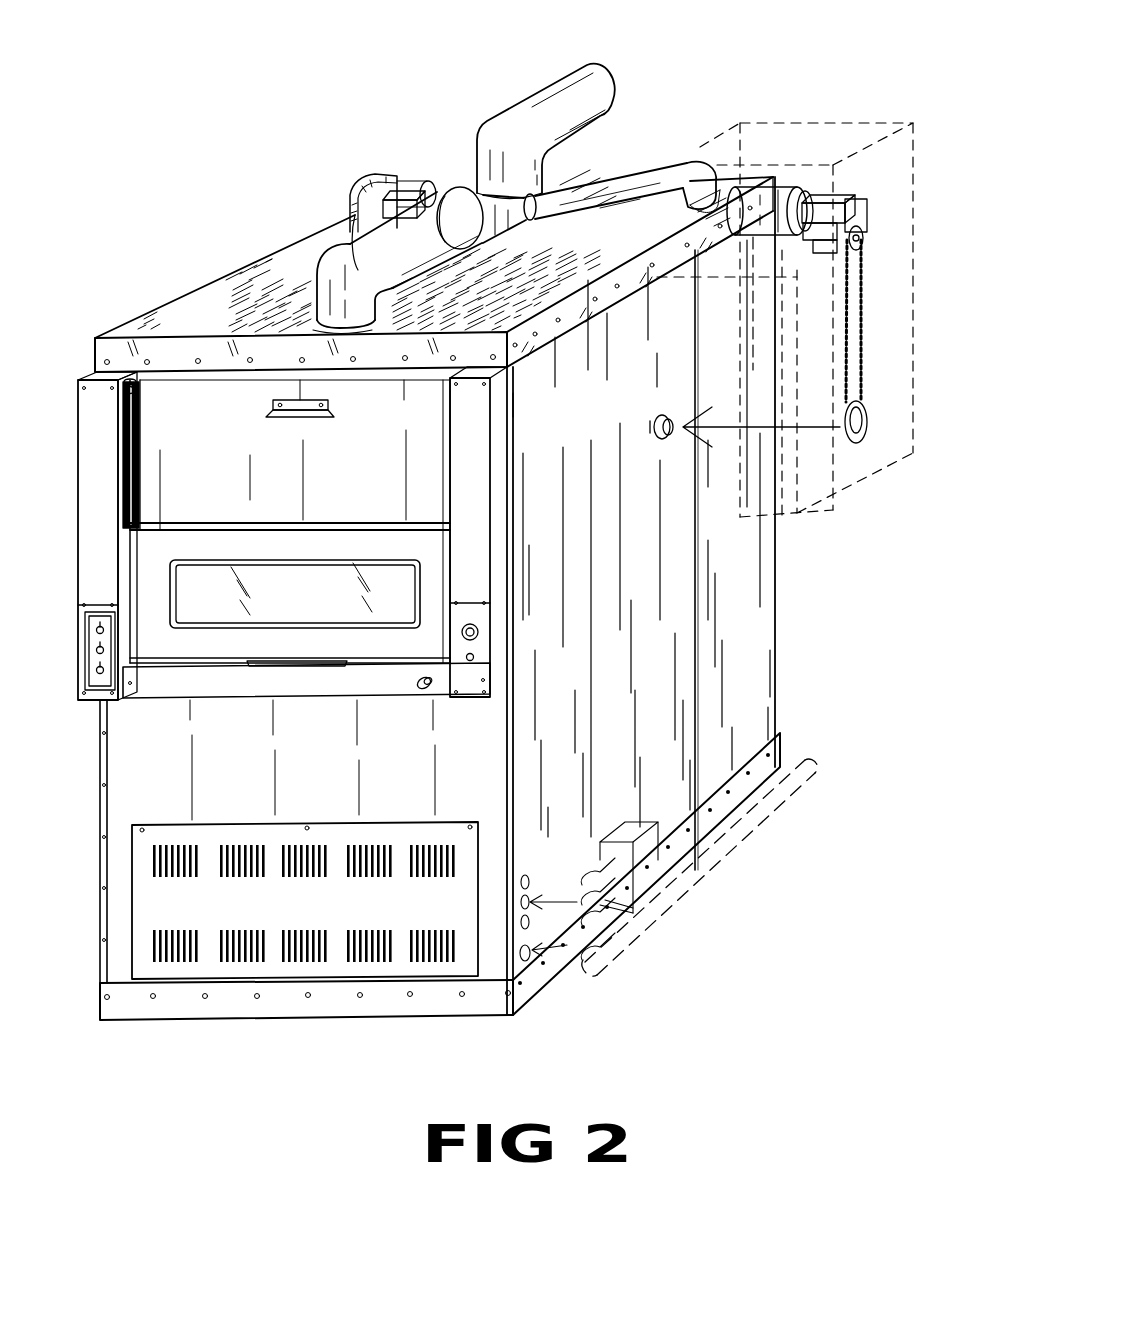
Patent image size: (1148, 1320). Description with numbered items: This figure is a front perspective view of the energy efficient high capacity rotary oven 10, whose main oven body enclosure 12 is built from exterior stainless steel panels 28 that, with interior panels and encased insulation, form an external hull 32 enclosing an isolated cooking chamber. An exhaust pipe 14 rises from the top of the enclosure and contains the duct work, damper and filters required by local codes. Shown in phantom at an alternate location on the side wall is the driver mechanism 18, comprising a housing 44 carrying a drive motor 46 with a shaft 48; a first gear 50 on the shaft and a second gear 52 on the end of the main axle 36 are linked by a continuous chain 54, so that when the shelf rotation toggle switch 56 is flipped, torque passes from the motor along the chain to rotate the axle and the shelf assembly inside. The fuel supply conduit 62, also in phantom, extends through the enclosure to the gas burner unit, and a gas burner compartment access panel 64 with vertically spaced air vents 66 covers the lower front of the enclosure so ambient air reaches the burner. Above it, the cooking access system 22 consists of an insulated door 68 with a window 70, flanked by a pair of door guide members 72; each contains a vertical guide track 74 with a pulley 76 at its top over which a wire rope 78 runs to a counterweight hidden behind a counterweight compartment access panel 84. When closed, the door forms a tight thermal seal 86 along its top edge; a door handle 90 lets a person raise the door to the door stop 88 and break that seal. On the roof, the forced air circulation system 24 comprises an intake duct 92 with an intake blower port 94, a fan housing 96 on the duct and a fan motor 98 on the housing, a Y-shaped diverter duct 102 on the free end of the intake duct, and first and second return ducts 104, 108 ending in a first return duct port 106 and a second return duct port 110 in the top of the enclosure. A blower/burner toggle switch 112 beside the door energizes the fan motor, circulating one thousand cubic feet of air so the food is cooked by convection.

The rotary oven 10 is at (146, 256).
The main oven body enclosure 12 is at (792, 649).
The exhaust pipe 14 is at (557, 90).
The driver mechanism 18 is at (766, 110).
The cooking access system 22 is at (304, 515).
The forced air circulation system 24 is at (342, 195).
The exterior stainless steel panels 28 is at (756, 556).
The external hull 32 is at (790, 706).
The main axle 36 is at (680, 425).
The housing 44 is at (913, 120).
The drive motor 46 is at (787, 187).
The shaft 48 is at (866, 236).
The first gear 50 is at (865, 258).
The second gear 52 is at (868, 436).
The continuous chain 54 is at (870, 378).
The shelf rotation toggle switch 56 is at (108, 667).
The fuel supply conduit 62 is at (682, 888).
The gas burner compartment access panel 64 is at (336, 832).
The air vents 66 is at (265, 940).
The insulated door 68 is at (240, 538).
The window 70 is at (338, 567).
The door guide members 72 is at (80, 372).
The vertical guide track 74 is at (135, 440).
The pulley 76 is at (133, 387).
The wire rope 78 is at (140, 490).
The counterweight compartment access panel 84 is at (113, 583).
The thermal seal 86 is at (425, 521).
The door stop 88 is at (325, 417).
The door handle 90 is at (320, 664).
The intake duct 92 is at (313, 286).
The intake blower port 94 is at (372, 330).
The fan housing 96 is at (345, 237).
The fan motor 98 is at (404, 190).
The Y-shaped diverter duct 102 is at (528, 220).
The first return duct 104 is at (458, 187).
The first return duct port 106 is at (403, 157).
The second return duct 108 is at (645, 178).
The second return duct port 110 is at (680, 212).
The blower/burner toggle switch 112 is at (104, 642).